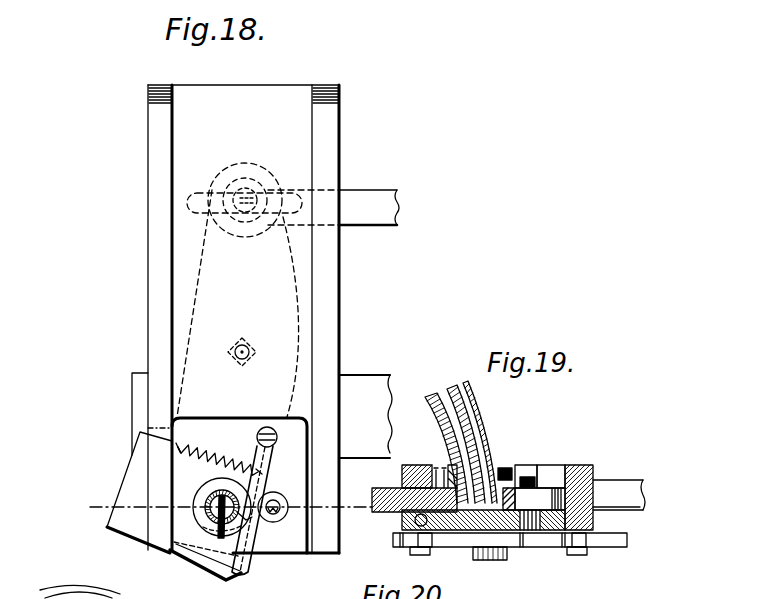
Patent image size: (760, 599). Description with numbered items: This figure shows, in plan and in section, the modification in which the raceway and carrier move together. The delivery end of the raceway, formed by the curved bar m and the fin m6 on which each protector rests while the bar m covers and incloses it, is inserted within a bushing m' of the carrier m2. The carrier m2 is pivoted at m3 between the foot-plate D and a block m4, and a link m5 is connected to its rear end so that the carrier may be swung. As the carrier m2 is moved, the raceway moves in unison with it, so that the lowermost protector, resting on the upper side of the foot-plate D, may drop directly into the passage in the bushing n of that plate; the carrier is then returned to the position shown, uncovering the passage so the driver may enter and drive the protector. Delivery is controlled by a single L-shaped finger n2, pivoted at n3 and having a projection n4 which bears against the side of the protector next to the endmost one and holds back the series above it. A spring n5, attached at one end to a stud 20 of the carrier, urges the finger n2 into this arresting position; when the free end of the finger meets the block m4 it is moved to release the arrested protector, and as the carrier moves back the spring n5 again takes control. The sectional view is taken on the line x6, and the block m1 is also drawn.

In FIG. 18, the block m4 is at (336, 153).
In FIG. 19, the block m4 is at (574, 466).
In FIG. 18, the link m5 is at (400, 207).
In FIG. 19, the link m5 is at (622, 470).
In FIG. 18, the pivot m3 is at (228, 352).
In FIG. 18, the bushing m' is at (273, 485).
In FIG. 18, the curved bar m is at (167, 499).
In FIG. 19, the curved bar m is at (505, 472).
In FIG. 18, the fin m6 is at (205, 505).
In FIG. 19, the fin m6 is at (478, 423).
In FIG. 18, the section line x6 is at (213, 504).
In FIG. 18, the carrier m2 is at (107, 528).
In FIG. 19, the carrier m2 is at (408, 487).
In FIG. 18, the spring n5 is at (213, 423).
In FIG. 18, the stud 20 is at (187, 442).
In FIG. 18, the pivot n3 is at (277, 441).
In FIG. 18, the bushing n is at (280, 498).
In FIG. 19, the bushing n is at (523, 547).
In FIG. 18, the projection n4 is at (246, 520).
In FIG. 18, the finger n2 is at (243, 572).
In FIG. 19, the finger n2 is at (542, 468).
In FIG. 18, the foot-plate D is at (300, 550).
In FIG. 19, the foot-plate D is at (400, 523).
In FIG. 19, the block m1 is at (515, 470).